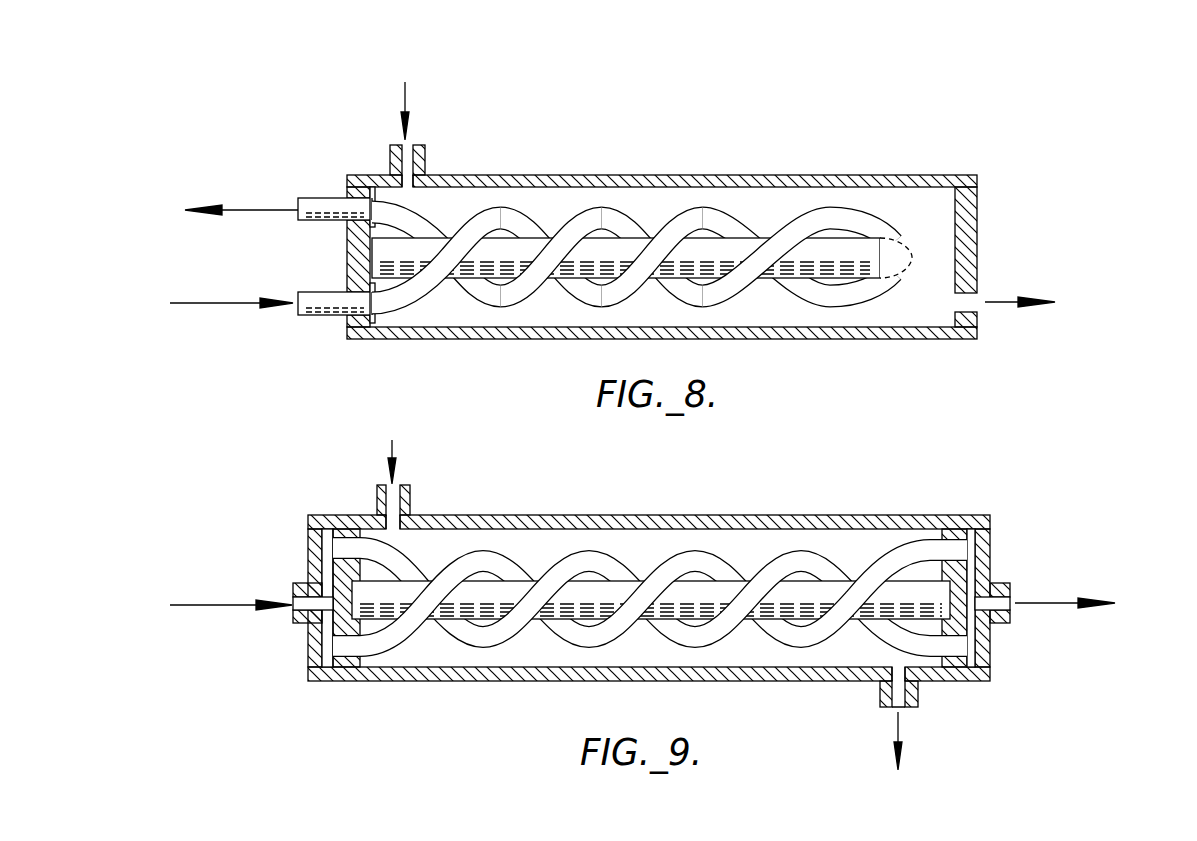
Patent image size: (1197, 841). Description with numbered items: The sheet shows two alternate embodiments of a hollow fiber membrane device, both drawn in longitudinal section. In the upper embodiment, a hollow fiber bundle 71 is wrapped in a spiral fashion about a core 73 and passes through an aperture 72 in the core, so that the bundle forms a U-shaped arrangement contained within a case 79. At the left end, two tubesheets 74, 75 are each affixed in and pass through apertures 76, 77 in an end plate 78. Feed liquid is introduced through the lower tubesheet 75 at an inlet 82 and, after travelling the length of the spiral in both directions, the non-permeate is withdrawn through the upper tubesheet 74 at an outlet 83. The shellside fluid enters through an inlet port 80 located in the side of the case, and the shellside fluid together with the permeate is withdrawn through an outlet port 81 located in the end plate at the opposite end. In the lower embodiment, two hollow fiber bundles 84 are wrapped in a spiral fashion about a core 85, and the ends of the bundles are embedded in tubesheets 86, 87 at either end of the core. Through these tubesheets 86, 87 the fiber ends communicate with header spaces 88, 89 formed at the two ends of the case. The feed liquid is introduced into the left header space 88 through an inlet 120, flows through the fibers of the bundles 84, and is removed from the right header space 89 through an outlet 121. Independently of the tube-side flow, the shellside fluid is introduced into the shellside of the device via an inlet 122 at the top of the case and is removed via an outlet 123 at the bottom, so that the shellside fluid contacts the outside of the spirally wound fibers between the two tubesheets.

In FIG. 8, the hollow fiber bundle 71 is at (780, 200).
In FIG. 8, the aperture 72 is at (893, 230).
In FIG. 8, the core 73 is at (802, 292).
In FIG. 8, the tubesheet 74 is at (320, 198).
In FIG. 8, the tubesheet 75 is at (322, 316).
In FIG. 8, the aperture 76 is at (345, 213).
In FIG. 8, the aperture 77 is at (343, 316).
In FIG. 8, the end plate 78 is at (335, 252).
In FIG. 8, the case 79 is at (860, 342).
In FIG. 8, the inlet port 80 is at (421, 146).
In FIG. 8, the outlet port 81 is at (979, 296).
In FIG. 8, the inlet 82 is at (293, 311).
In FIG. 8, the outlet 83 is at (296, 206).
In FIG. 9, the hollow fiber bundles 84 is at (650, 595).
In FIG. 9, the core 85 is at (805, 603).
In FIG. 9, the tubesheet 86 is at (345, 570).
In FIG. 9, the tubesheet 87 is at (958, 576).
In FIG. 9, the header space 88 is at (331, 538).
In FIG. 9, the header space 89 is at (972, 542).
In FIG. 9, the inlet 120 is at (296, 621).
In FIG. 9, the outlet 121 is at (1011, 619).
In FIG. 9, the inlet 122 is at (411, 497).
In FIG. 9, the outlet 123 is at (912, 710).